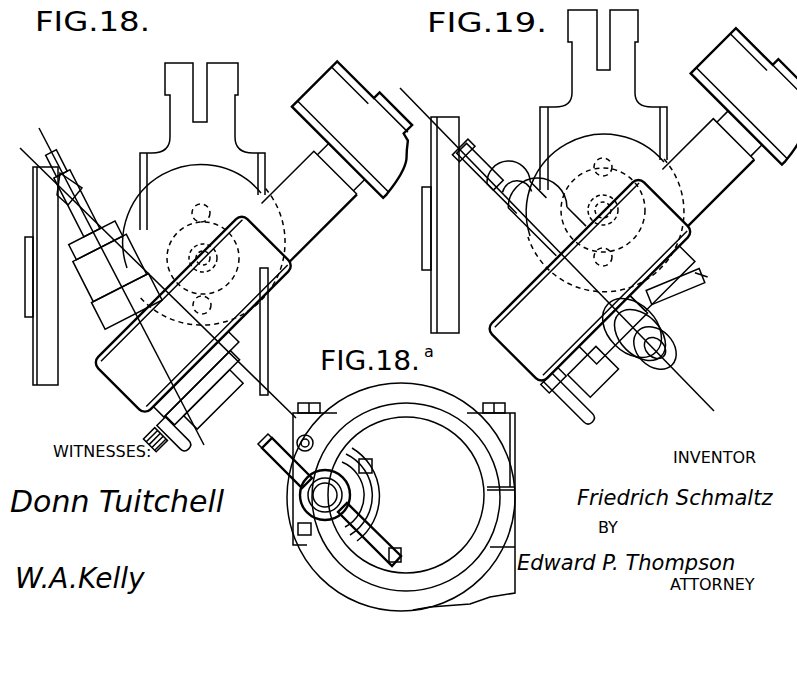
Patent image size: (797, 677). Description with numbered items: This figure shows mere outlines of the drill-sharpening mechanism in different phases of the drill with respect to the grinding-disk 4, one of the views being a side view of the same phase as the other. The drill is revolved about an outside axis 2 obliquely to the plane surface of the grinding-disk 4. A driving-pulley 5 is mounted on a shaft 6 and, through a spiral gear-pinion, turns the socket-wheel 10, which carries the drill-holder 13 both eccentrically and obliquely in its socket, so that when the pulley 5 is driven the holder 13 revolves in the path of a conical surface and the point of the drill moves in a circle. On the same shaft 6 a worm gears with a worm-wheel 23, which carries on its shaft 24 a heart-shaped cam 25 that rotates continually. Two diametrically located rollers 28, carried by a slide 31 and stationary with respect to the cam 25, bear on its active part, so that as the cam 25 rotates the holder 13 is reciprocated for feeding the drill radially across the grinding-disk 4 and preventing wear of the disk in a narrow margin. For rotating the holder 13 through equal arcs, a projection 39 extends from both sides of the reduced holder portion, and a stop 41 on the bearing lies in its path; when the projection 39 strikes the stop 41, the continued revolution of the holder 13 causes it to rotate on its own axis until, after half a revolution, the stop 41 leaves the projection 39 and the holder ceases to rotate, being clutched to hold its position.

In FIG. 18, the outside axis 2 is at (268, 392).
In FIG. 18, the grinding-disk 4 is at (42, 235).
In FIG. 19, the grinding-disk 4 is at (440, 292).
In FIG. 18, the driving-pulley 5 is at (363, 127).
In FIG. 19, the driving-pulley 5 is at (744, 93).
In FIG. 18, the shaft 6 is at (347, 175).
In FIG. 19, the shaft 6 is at (757, 158).
In FIG. 18A, the socket-wheel 10 is at (401, 497).
In FIG. 18, the drill-holder 13 is at (133, 253).
In FIG. 19, the drill-holder 13 is at (522, 188).
In FIG. 18, the worm-wheel 23 is at (219, 242).
In FIG. 19, the worm-wheel 23 is at (600, 218).
In FIG. 18, the shaft 24 is at (202, 269).
In FIG. 19, the shaft 24 is at (607, 213).
In FIG. 18, the heart-shaped cam 25 is at (230, 268).
In FIG. 19, the heart-shaped cam 25 is at (612, 253).
In FIG. 18, the rollers 28 is at (201, 210).
In FIG. 19, the rollers 28 is at (597, 167).
In FIG. 18, the slide 31 is at (155, 165).
In FIG. 19, the slide 31 is at (553, 121).
In FIG. 18, the projection 39 is at (240, 387).
In FIG. 18A, the projection 39 is at (397, 543).
In FIG. 19, the projection 39 is at (683, 297).
In FIG. 18, the stop 41 is at (193, 450).
In FIG. 18A, the stop 41 is at (315, 442).
In FIG. 19, the stop 41 is at (570, 400).